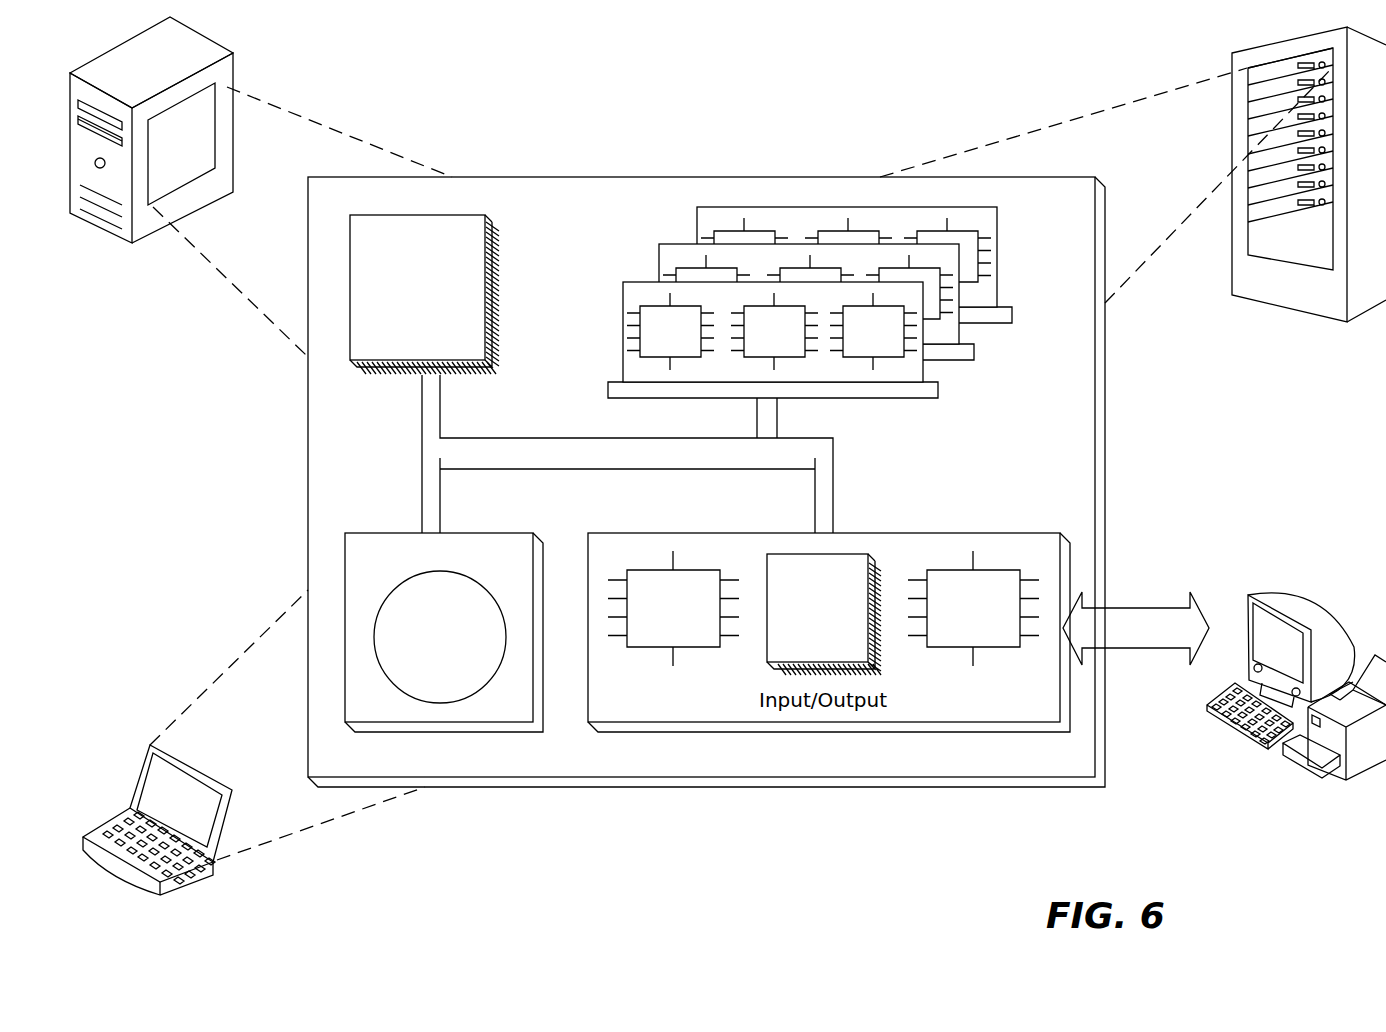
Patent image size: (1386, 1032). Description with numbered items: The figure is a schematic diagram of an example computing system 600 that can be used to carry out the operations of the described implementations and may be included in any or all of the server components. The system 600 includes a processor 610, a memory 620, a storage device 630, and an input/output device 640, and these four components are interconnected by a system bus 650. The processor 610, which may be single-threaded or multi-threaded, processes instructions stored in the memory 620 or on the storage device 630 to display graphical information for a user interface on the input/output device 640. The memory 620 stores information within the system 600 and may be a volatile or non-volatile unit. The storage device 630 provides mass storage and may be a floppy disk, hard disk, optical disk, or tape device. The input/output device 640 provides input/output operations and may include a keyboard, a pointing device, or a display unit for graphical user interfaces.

The computing system 600 is at (512, 90).
The processor 610 is at (424, 294).
The memory 620 is at (1003, 352).
The storage device 630 is at (444, 632).
The input/output device 640 is at (1247, 600).
The system bus 650 is at (622, 458).